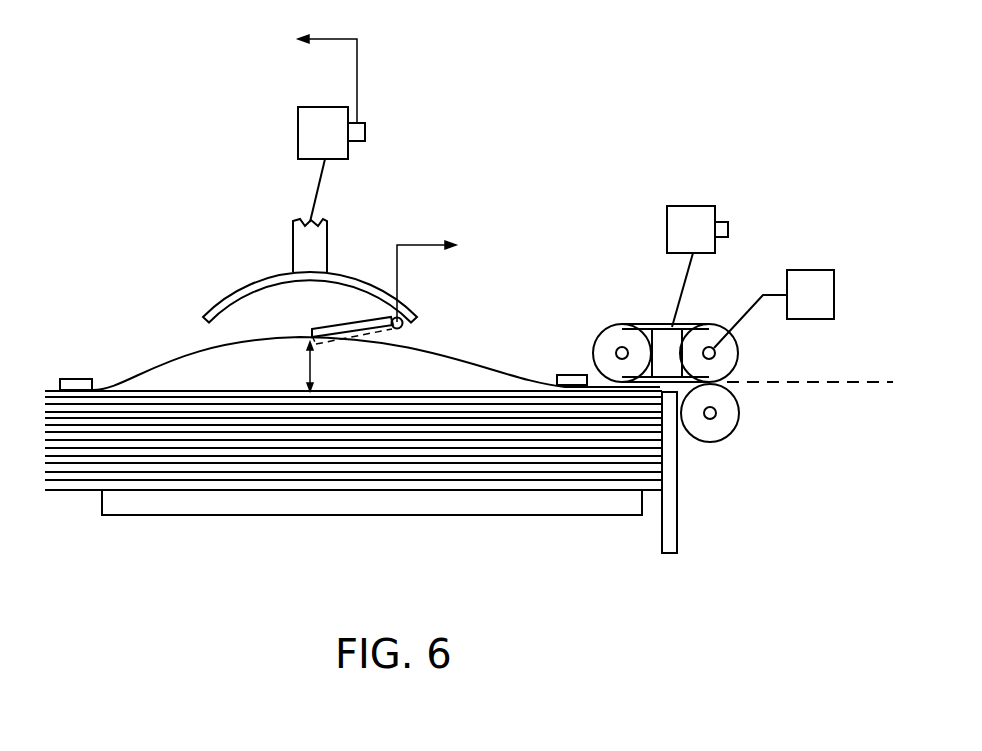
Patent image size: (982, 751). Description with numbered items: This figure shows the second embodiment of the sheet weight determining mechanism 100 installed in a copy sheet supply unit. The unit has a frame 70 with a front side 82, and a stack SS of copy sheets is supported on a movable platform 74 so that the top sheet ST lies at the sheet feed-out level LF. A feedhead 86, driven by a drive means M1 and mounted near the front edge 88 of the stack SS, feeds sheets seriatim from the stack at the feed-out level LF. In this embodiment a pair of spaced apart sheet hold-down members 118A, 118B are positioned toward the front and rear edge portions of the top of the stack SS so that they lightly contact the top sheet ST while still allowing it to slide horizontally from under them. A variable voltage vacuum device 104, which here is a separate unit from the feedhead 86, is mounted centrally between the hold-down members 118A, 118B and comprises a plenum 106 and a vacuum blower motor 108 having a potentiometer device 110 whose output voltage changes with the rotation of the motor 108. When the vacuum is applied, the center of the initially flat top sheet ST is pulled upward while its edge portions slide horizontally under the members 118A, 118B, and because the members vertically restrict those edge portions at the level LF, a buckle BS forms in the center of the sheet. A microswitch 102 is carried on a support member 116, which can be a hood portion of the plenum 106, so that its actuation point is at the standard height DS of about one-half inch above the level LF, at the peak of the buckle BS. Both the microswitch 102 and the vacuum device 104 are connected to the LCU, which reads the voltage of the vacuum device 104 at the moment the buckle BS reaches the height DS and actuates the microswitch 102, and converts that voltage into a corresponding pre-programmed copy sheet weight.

The frame 70 is at (656, 547).
The platform 74 is at (299, 508).
The front side 82 is at (680, 512).
The feedhead 86 is at (745, 357).
The front edge 88 is at (655, 460).
The sheet weight determining mechanism 100 is at (258, 253).
The microswitch 102 is at (340, 325).
The variable voltage vacuum device 104 is at (308, 187).
The plenum 106 is at (322, 247).
The vacuum blower motor 108 is at (307, 107).
The potentiometer device 110 is at (365, 129).
The support member 116 is at (210, 308).
The sheet hold-down member 118A is at (83, 378).
The sheet hold-down member 118B is at (566, 374).
The top sheet ST is at (143, 378).
The buckle BS is at (236, 346).
The standard height DS is at (316, 354).
The stack SS is at (515, 455).
The sheet feed-out level LF is at (757, 386).
The drive means M1 is at (818, 270).
The logic and control unit LCU is at (376, 175).